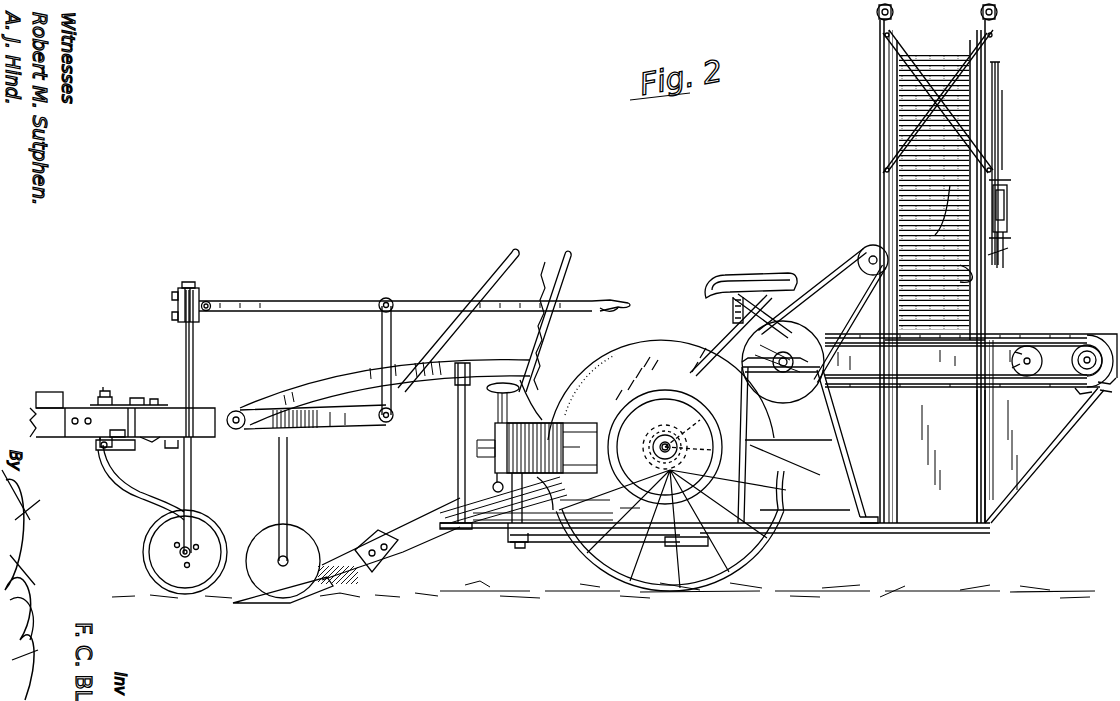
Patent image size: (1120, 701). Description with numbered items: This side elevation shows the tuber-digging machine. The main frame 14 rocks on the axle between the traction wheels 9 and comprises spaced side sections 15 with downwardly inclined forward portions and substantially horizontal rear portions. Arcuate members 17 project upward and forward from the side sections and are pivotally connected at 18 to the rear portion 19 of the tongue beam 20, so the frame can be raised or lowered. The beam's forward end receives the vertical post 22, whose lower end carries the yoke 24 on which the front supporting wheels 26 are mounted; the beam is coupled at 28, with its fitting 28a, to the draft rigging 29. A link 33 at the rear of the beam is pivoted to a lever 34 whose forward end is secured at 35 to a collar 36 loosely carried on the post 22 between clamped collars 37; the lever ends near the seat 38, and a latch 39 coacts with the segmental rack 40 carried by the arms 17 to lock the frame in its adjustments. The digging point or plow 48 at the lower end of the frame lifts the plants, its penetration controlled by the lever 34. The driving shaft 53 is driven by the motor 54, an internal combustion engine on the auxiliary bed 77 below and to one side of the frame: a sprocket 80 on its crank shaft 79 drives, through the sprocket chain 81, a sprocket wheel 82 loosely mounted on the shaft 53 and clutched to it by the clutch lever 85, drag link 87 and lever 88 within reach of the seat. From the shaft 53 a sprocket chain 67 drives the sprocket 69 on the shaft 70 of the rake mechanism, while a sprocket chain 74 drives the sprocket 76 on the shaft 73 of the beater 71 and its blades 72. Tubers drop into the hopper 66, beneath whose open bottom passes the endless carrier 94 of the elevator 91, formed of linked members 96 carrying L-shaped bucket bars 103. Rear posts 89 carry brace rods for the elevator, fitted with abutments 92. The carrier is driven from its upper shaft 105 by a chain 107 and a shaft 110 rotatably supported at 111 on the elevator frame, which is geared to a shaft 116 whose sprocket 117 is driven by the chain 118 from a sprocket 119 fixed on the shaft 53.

The traction wheels 9 is at (700, 598).
The main frame 14 is at (410, 522).
The side sections 15 is at (393, 572).
The arcuate members 17 is at (360, 358).
The pivotal connection 18 is at (236, 410).
The rear portion of tongue beam 19 is at (338, 430).
The tongue beam 20 is at (165, 412).
The post 22 is at (196, 352).
The yoke 24 is at (193, 487).
The front supporting wheels 26 is at (195, 585).
The coupling 28 is at (120, 395).
The clamp nut 28a is at (106, 387).
The draft rigging 29 is at (46, 385).
The link 33 is at (393, 345).
The lever 34 is at (356, 304).
The pivot 35 is at (210, 300).
The collar 36 is at (176, 305).
The collars 37 is at (190, 282).
The seat 38 is at (766, 283).
The latch 39 is at (508, 330).
The segmental rack 40 is at (524, 285).
The digging point or plow 48 is at (340, 570).
The driving shaft 53 is at (748, 350).
The motor 54 is at (590, 430).
The hopper 66 is at (1008, 437).
The sprocket chain 67 is at (950, 373).
The sprocket 69 is at (1029, 346).
The shaft 70 is at (1047, 377).
The beater 71 is at (1092, 395).
The blades 72 is at (1105, 395).
The beater shaft 73 is at (1089, 345).
The sprocket chain 74 is at (907, 393).
The sprocket 76 is at (1078, 352).
The auxiliary frame or bed 77 is at (818, 530).
The crank shaft 79 is at (668, 450).
The sprocket 80 is at (660, 430).
The sprocket chain 81 is at (706, 386).
The sprocket wheel 82 is at (792, 322).
The clutch lever 85 is at (688, 546).
The drag link 87 is at (553, 542).
The lever 88 is at (514, 515).
The posts 89 is at (980, 497).
The elevator 91 is at (898, 115).
The abutments 92 is at (877, 12).
The endless carrier 94 is at (940, 55).
The linked members 96 is at (912, 185).
The bucket bar 103 is at (960, 178).
The shaft 105 is at (1000, 78).
The chain 107 is at (1004, 128).
The shaft 110 is at (960, 282).
The rotatable support 111 is at (1010, 238).
The shaft 116 is at (870, 243).
The sprocket 117 is at (860, 285).
The chain 118 is at (826, 282).
The sprocket 119 is at (1010, 210).